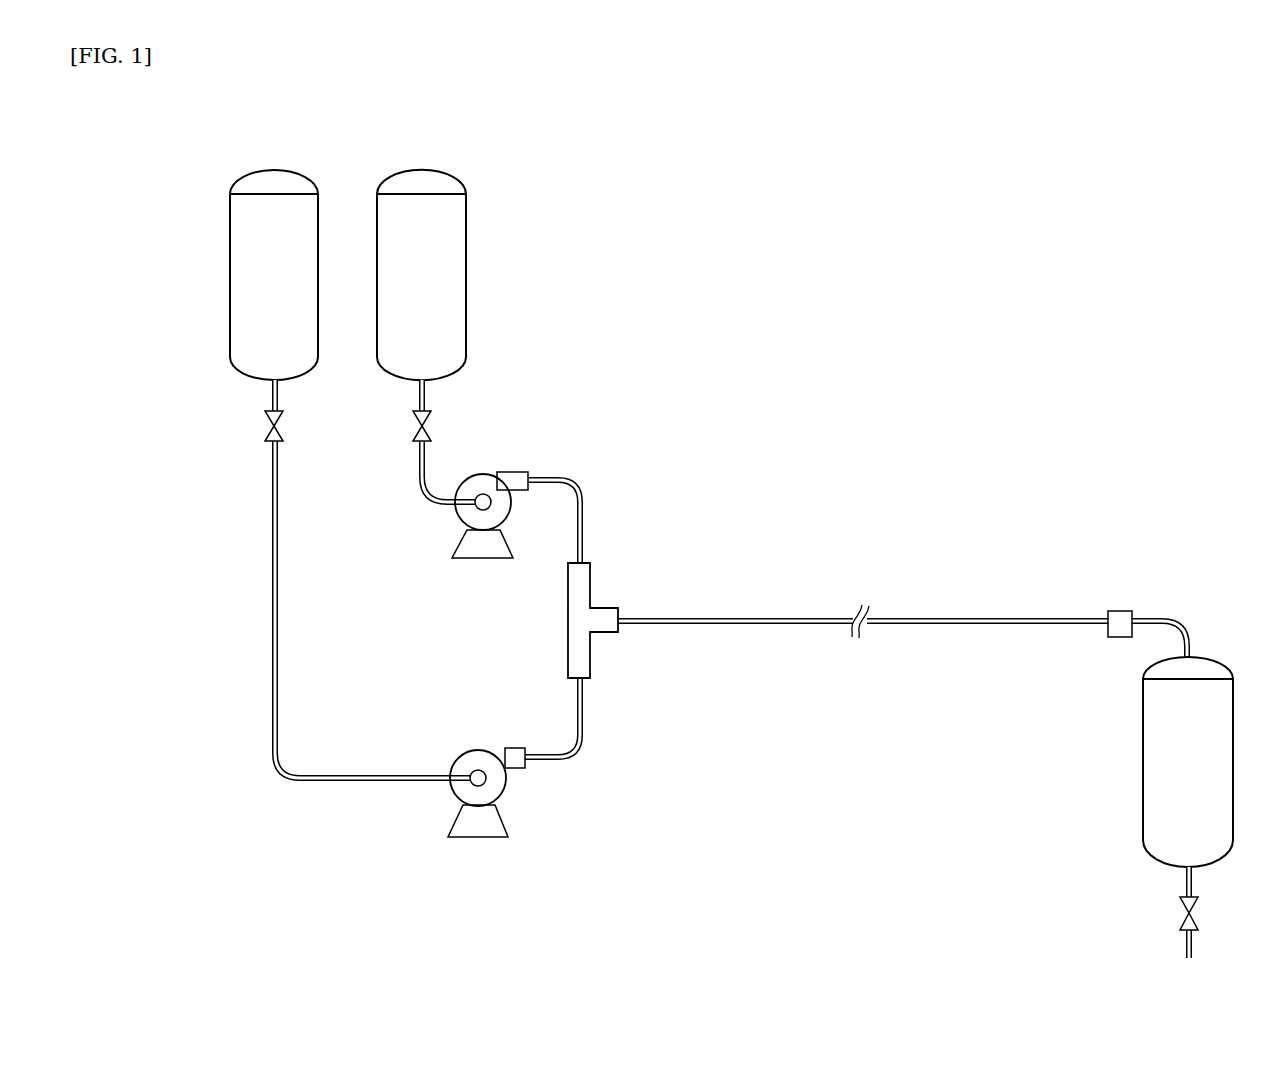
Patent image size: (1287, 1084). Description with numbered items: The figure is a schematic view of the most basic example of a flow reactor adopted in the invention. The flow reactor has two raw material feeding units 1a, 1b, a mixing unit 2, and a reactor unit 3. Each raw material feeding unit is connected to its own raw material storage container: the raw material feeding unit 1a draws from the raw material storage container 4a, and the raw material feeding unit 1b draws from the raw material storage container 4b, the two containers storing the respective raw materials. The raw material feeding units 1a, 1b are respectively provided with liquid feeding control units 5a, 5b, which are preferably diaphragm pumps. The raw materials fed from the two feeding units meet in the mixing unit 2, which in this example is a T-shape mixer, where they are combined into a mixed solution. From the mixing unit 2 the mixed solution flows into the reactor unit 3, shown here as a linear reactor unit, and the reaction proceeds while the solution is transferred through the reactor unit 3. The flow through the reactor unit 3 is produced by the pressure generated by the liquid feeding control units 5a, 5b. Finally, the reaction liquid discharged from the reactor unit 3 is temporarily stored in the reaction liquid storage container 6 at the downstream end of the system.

The raw material feeding unit 1a is at (578, 488).
The raw material feeding unit 1b is at (573, 755).
The mixing unit 2 is at (592, 650).
The reactor unit 3 is at (707, 615).
The raw material storage container 4a is at (468, 268).
The raw material storage container 4b is at (230, 267).
The liquid feeding control unit 5a is at (487, 558).
The liquid feeding control unit 5b is at (480, 838).
The reaction liquid storage container 6 is at (1140, 770).